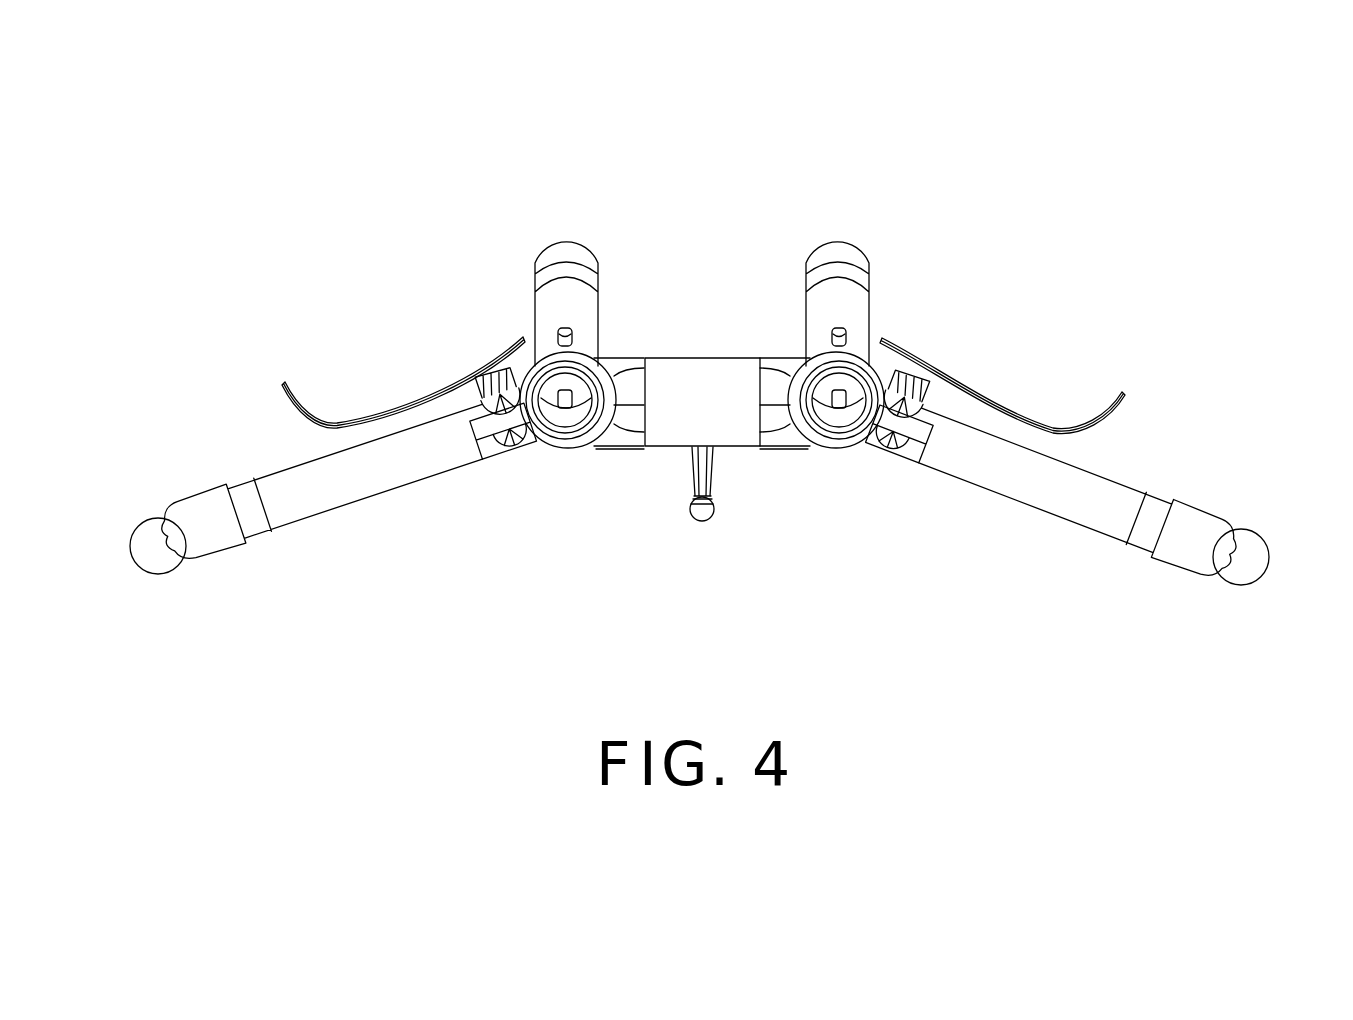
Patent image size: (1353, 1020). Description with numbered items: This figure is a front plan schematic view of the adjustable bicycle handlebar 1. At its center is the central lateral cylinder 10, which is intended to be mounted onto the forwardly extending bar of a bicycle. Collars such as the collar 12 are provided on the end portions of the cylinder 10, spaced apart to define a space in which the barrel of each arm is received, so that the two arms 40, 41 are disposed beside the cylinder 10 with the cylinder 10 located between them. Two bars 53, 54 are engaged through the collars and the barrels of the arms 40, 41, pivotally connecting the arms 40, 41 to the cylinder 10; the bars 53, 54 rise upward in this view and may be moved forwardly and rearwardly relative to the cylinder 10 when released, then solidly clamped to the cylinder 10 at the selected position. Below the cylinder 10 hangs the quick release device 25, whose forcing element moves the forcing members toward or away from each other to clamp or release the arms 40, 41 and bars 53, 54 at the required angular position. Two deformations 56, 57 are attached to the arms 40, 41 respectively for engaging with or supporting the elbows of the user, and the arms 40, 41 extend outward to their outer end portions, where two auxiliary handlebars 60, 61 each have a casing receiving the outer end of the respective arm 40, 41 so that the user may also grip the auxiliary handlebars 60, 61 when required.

The adjustable bicycle handlebar 1 is at (1102, 203).
The central lateral cylinder 10 is at (708, 362).
The collar 12 is at (561, 445).
The quick release device 25 is at (708, 540).
The arm 40 is at (1075, 509).
The arm 41 is at (365, 490).
The bar 53 is at (846, 243).
The bar 54 is at (577, 242).
The deformation 56 is at (1057, 426).
The deformation 57 is at (375, 419).
The auxiliary handlebar 60 is at (1260, 540).
The auxiliary handlebar 61 is at (145, 520).